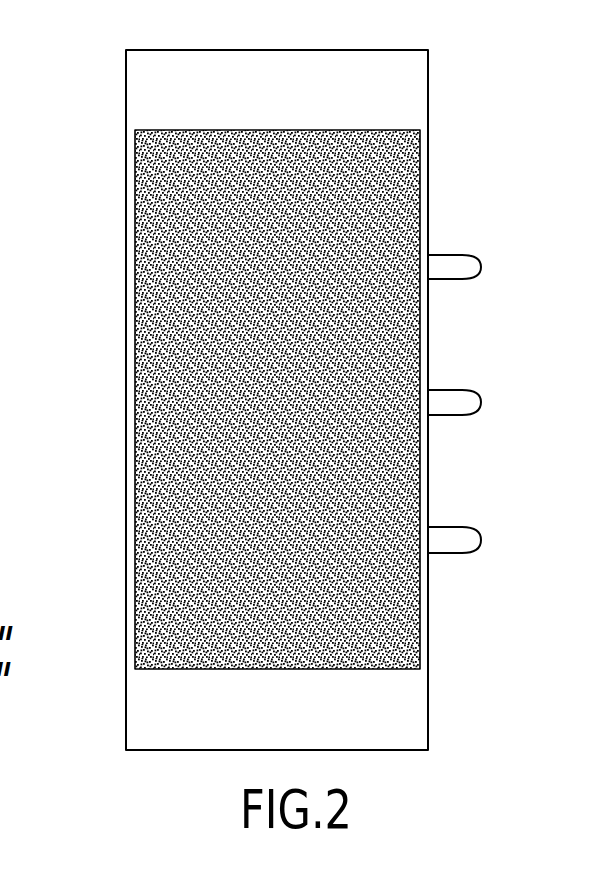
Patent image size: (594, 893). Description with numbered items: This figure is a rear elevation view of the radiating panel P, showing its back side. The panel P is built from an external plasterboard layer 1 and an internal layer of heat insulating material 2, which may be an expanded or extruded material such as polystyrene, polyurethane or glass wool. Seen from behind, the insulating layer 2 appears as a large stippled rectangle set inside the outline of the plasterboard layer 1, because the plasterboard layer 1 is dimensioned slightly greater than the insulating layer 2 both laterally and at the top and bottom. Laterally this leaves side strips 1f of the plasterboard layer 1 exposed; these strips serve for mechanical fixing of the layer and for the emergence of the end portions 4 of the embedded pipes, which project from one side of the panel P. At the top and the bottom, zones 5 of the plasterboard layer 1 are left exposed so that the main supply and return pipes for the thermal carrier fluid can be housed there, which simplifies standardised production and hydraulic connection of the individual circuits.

The plasterboard layer 1 is at (188, 710).
The side strips 1f is at (130, 222).
The heat insulating layer 2 is at (188, 414).
The end portions 4 is at (428, 142).
The zones 5 is at (300, 106).
The radiating panel P is at (108, 114).